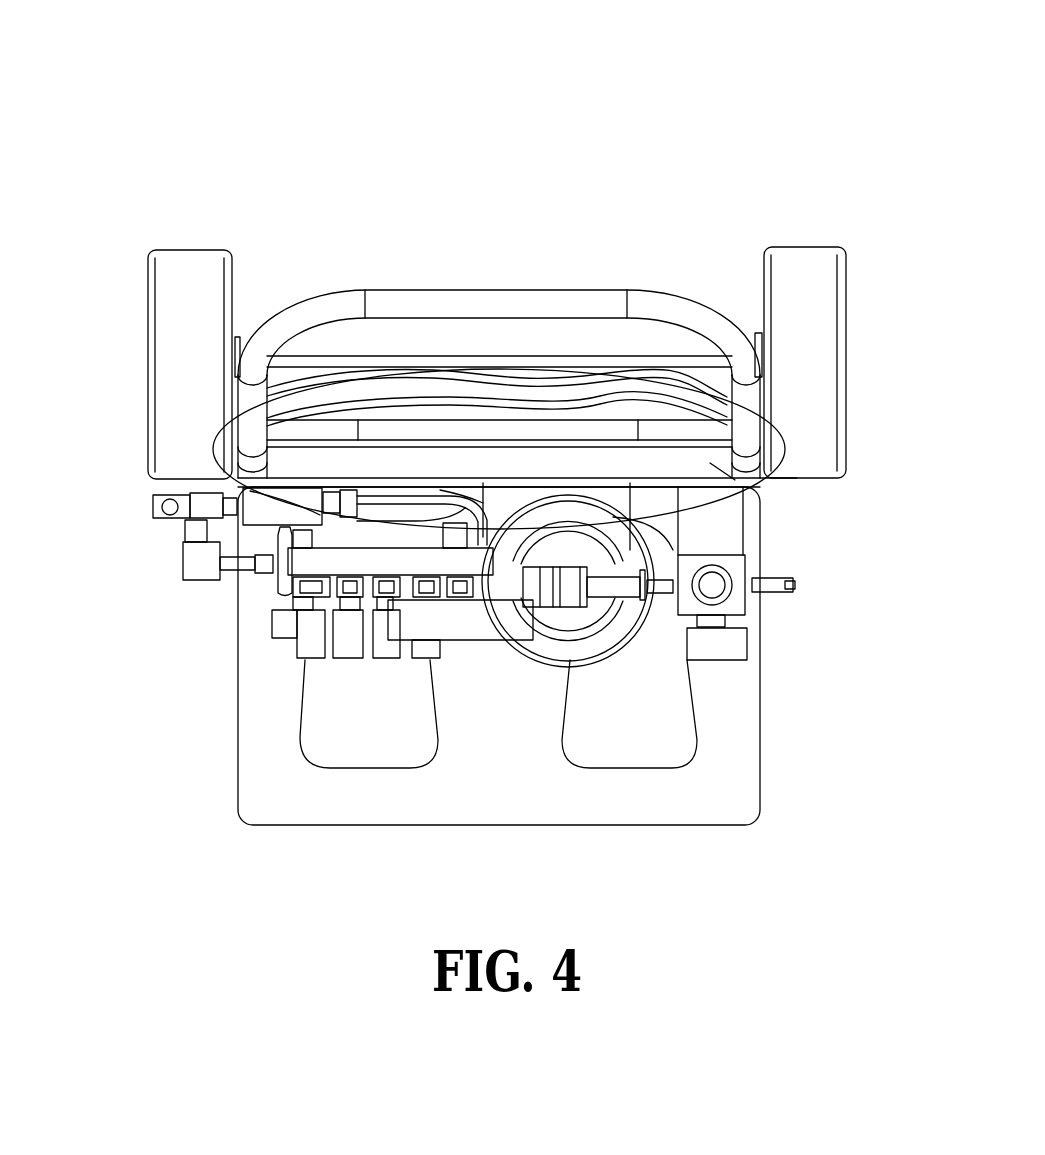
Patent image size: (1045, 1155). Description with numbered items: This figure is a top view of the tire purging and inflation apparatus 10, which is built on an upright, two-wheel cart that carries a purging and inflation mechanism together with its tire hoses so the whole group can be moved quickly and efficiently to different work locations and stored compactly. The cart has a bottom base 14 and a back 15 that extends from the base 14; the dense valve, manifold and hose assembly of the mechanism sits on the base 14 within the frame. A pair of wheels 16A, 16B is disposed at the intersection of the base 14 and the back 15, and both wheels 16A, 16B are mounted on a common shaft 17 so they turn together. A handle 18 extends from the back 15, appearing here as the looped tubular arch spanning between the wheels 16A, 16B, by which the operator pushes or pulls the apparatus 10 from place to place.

The tire purging and inflation apparatus 10 is at (729, 91).
The bottom base 14 is at (285, 807).
The back 15 is at (760, 487).
The wheel 16A is at (177, 350).
The wheel 16B is at (822, 398).
The common shaft 17 is at (507, 370).
The handle 18 is at (317, 313).